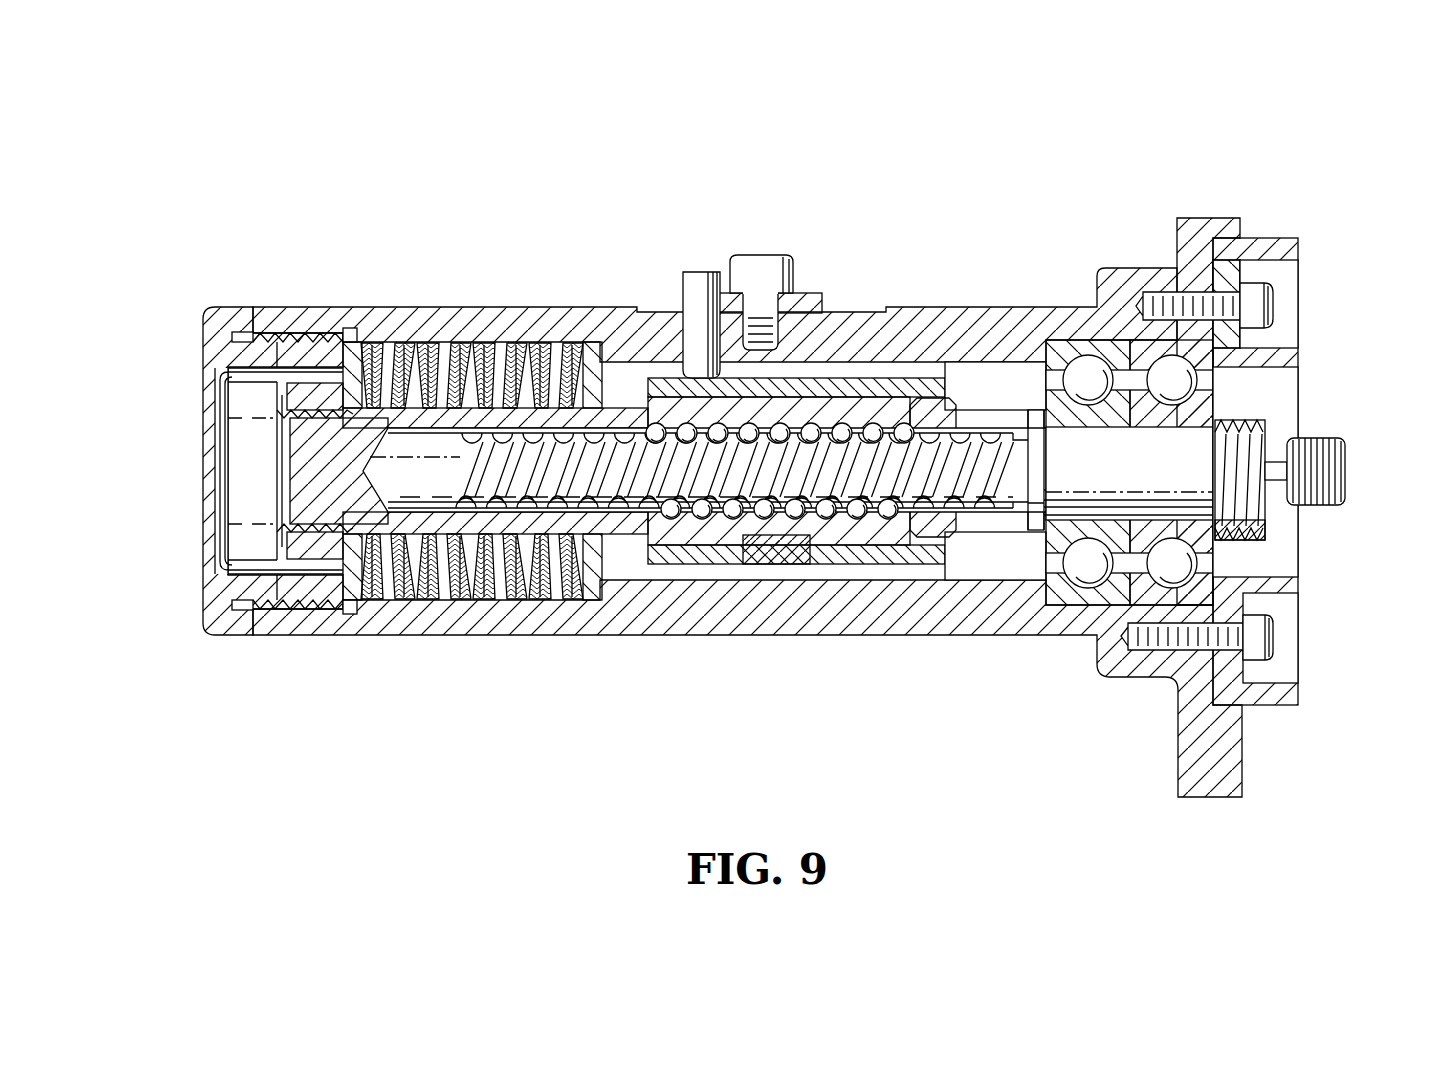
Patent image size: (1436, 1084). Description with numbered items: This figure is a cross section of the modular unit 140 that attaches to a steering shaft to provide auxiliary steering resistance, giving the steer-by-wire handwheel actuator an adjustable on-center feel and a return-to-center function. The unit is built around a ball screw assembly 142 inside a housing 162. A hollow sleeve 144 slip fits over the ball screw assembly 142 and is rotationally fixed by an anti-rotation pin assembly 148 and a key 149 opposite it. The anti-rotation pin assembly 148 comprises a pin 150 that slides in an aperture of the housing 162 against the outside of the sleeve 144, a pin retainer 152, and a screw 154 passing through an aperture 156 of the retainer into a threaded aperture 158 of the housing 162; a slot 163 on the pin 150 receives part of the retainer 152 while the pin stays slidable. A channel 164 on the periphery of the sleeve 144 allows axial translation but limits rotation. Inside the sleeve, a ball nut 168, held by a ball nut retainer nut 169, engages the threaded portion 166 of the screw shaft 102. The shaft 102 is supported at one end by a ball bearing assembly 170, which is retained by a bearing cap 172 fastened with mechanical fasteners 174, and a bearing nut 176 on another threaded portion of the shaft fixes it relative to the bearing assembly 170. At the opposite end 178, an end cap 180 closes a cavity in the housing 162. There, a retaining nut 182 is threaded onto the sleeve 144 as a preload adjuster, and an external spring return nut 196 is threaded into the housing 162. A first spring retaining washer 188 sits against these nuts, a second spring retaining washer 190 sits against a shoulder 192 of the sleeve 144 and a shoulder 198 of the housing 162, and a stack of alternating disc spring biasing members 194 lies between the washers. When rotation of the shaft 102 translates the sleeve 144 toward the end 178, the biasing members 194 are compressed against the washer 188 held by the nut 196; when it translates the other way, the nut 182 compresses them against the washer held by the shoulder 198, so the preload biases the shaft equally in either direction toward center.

The screw shaft 102 is at (1330, 443).
The modular unit 140 is at (1322, 766).
The ball screw assembly 142 is at (869, 560).
The sleeve 144 is at (944, 565).
The anti-rotation pin assembly 148 is at (833, 292).
The key 149 is at (783, 562).
The pin 150 is at (682, 300).
The pin retainer 152 is at (805, 300).
The screw 154 is at (750, 258).
The aperture 156 is at (770, 327).
The threaded aperture 158 is at (755, 318).
The housing 162 is at (668, 636).
The slot 163 is at (712, 318).
The channel 164 is at (928, 365).
The threaded portion 166 is at (987, 433).
The ball nut 168 is at (920, 372).
The ball nut retainer nut 169 is at (953, 548).
The ball bearing assembly 170 is at (1152, 347).
The bearing cap 172 is at (1284, 238).
The mechanical fasteners 174 is at (1263, 632).
The bearing nut 176 is at (1262, 293).
The opposite end 178 is at (178, 568).
The end cap 180 is at (205, 634).
The retaining nut 182 is at (290, 417).
The first spring retaining washer 188 is at (358, 590).
The second spring retaining washer 190 is at (568, 598).
The shoulder 192 is at (592, 392).
The biasing members 194 is at (447, 405).
The external spring return nut 196 is at (305, 390).
The shoulder 198 is at (588, 600).